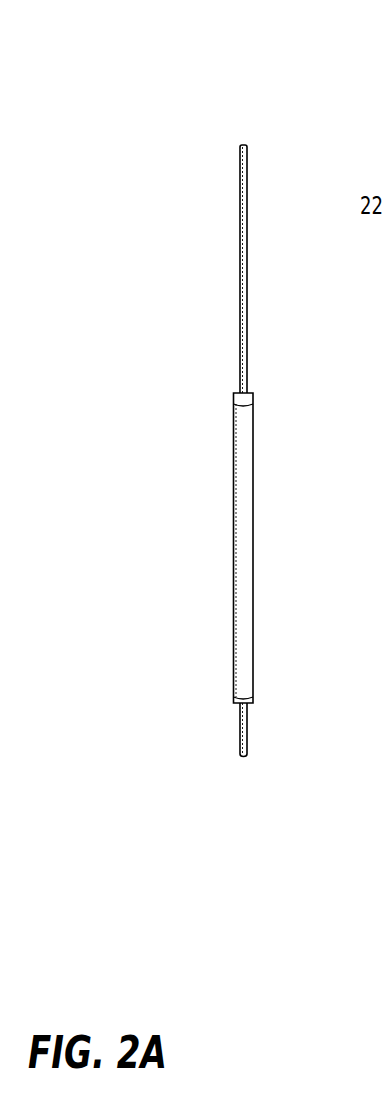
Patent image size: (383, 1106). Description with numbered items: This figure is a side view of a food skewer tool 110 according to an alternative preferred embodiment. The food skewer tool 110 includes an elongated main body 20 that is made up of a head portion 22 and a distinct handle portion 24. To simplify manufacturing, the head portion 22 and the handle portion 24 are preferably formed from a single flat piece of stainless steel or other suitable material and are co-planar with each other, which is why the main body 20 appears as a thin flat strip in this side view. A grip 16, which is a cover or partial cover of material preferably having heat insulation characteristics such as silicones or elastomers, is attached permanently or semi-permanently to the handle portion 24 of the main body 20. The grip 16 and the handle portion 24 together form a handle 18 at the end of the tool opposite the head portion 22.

The food skewer tool 110 is at (145, 32).
The head portion 22 is at (242, 227).
The elongated main body 20 is at (278, 362).
The grip 16 is at (243, 508).
The handle 18 is at (278, 563).
The handle portion 24 is at (240, 713).